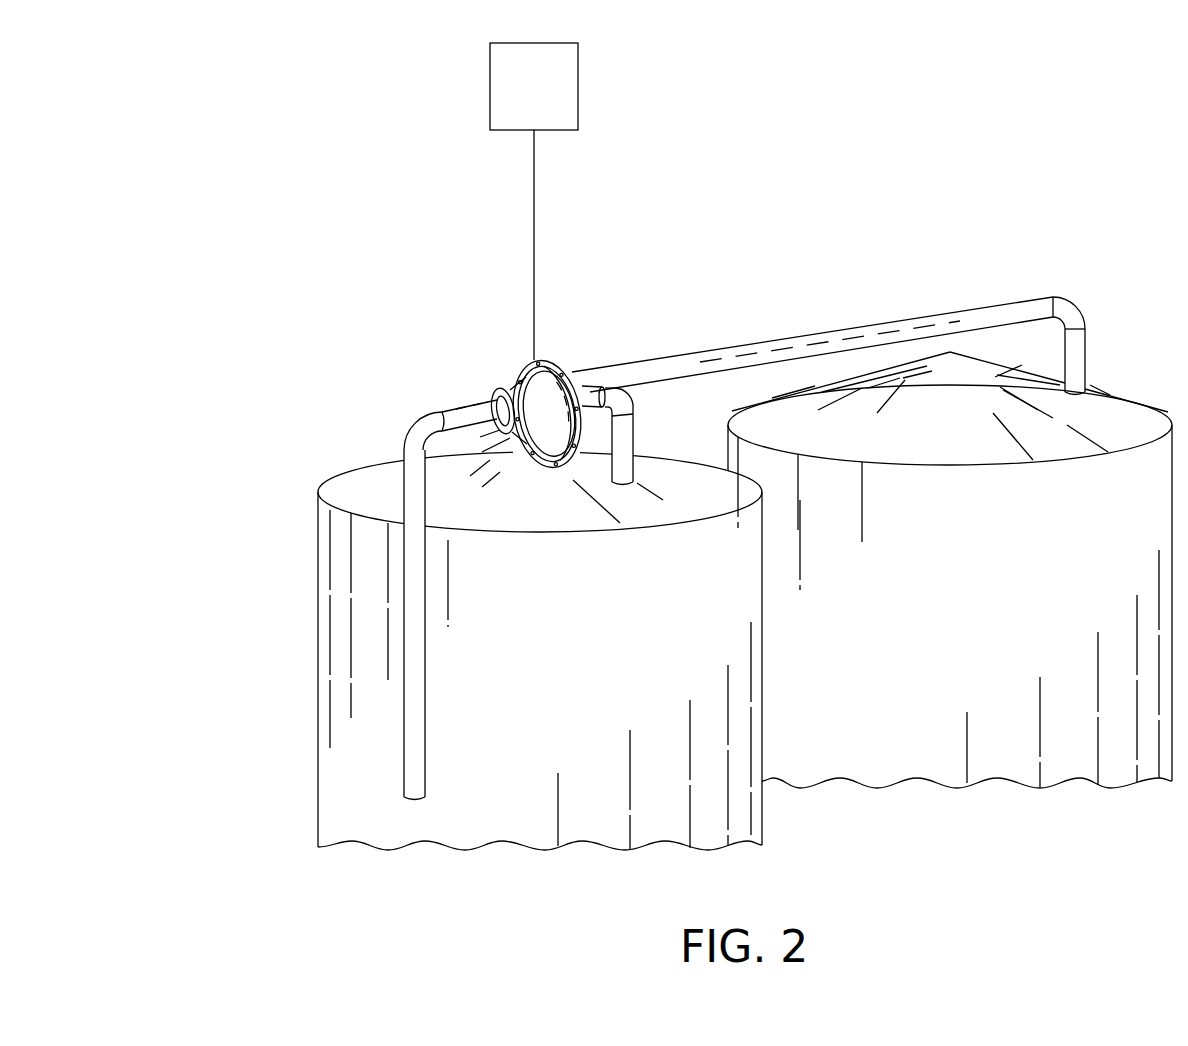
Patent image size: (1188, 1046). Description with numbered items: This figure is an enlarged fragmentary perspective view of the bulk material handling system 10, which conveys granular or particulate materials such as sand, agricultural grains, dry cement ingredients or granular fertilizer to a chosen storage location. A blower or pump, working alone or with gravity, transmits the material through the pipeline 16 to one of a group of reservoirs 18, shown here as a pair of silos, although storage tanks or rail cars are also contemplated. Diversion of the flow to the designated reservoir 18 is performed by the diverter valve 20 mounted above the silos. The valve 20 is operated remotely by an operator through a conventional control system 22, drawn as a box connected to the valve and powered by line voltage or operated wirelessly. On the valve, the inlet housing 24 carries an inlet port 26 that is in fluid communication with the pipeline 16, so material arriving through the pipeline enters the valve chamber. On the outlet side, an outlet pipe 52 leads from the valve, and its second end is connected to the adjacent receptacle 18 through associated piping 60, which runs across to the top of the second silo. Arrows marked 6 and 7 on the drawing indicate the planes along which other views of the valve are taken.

The bulk material handling system 10 is at (799, 195).
The pipeline 16 is at (410, 750).
The reservoir 18 is at (530, 698).
The diverter valve 20 is at (562, 358).
The control system 22 is at (519, 102).
The inlet housing 24 is at (531, 448).
The inlet port 26 is at (523, 413).
The outlet pipe 52 is at (588, 410).
The piping 60 is at (622, 353).
The section line 6- 6 is at (490, 384).
The section line 7- 7 is at (548, 358).